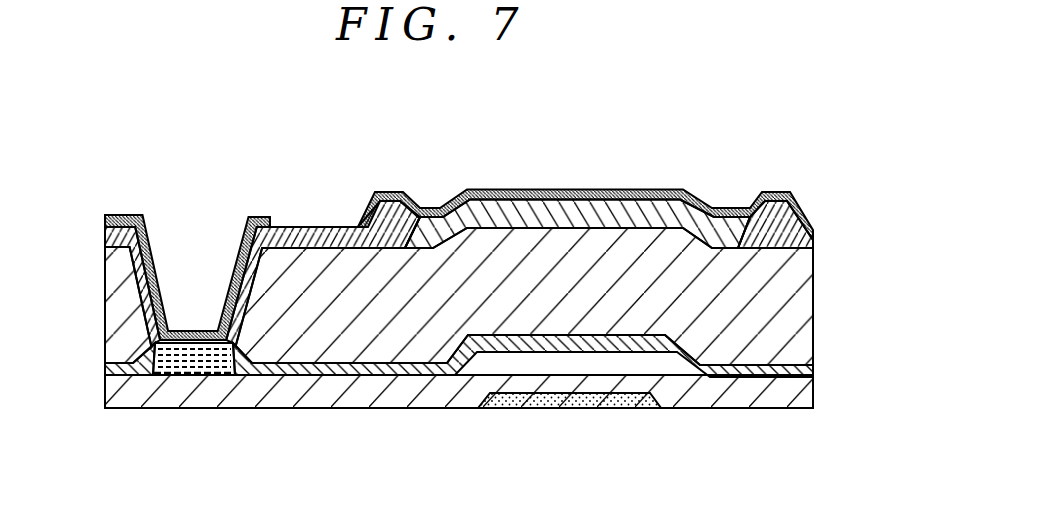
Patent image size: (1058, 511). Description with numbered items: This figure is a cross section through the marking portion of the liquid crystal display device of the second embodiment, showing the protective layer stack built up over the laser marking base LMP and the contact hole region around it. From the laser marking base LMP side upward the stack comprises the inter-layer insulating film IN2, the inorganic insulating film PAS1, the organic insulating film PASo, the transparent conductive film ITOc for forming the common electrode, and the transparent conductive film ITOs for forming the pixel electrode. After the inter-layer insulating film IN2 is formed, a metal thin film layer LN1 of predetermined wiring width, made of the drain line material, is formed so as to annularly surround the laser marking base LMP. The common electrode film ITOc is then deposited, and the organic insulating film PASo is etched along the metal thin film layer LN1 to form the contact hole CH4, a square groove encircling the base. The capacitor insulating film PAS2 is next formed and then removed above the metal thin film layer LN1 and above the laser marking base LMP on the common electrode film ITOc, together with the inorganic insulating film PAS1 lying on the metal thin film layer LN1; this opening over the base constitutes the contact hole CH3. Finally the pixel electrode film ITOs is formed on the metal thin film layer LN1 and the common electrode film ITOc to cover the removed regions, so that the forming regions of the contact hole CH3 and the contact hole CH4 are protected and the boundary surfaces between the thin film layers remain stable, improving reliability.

The contact hole CH3 is at (730, 161).
The contact hole CH4 is at (151, 248).
The transparent conductive film for forming pixel electrode ITOs is at (800, 204).
The capacitor insulating film PAS2 is at (815, 233).
The transparent conductive film for forming common electrode ITOc is at (744, 249).
The organic insulating film PASo is at (803, 321).
The inorganic insulating film PAS1 is at (806, 370).
The inter-layer insulating film IN2 is at (803, 400).
The laser marking base LMP is at (635, 408).
The metal thin film layer LN1 is at (197, 365).